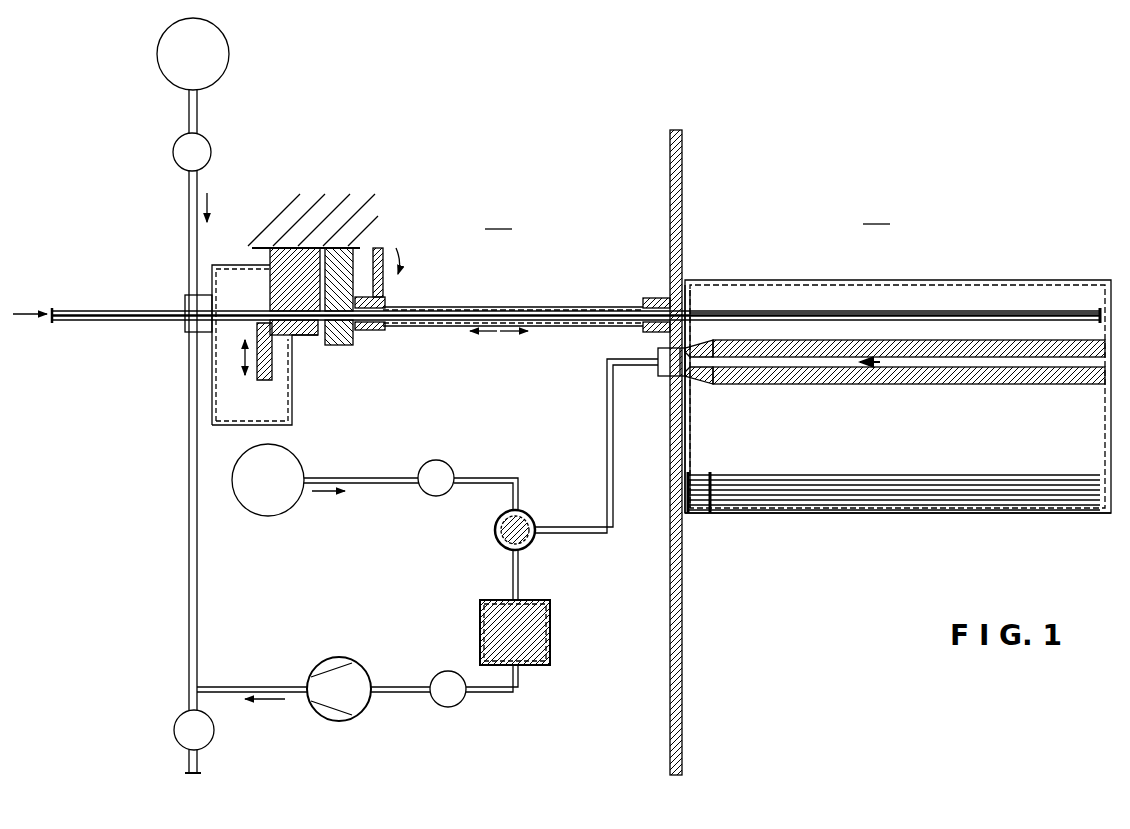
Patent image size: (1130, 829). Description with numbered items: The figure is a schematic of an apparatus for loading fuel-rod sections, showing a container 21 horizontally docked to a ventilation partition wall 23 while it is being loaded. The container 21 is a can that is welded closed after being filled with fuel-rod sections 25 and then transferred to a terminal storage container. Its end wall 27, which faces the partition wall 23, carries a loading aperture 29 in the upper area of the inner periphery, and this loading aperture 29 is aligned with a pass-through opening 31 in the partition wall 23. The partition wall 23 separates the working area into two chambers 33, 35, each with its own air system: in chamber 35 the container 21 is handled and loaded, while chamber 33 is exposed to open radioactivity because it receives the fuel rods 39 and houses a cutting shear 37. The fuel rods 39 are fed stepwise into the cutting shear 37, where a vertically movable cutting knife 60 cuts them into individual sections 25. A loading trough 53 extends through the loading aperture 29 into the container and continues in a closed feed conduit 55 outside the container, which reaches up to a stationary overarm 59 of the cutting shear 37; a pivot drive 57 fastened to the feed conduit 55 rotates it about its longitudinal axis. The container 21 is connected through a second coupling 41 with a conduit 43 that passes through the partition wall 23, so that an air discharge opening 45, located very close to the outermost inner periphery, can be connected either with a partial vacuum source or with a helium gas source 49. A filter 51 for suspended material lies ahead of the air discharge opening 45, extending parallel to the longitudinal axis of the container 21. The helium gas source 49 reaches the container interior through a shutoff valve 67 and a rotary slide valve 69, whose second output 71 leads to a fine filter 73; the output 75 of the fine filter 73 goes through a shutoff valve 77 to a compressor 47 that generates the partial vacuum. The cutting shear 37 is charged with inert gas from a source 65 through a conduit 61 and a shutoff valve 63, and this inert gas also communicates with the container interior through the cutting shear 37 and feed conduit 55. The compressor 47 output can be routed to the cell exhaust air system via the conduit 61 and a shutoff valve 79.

The container 21 is at (795, 282).
The ventilation partition wall 23 is at (684, 700).
The fuel-rod sections 25 is at (945, 312).
The end wall 27 is at (686, 435).
The loading aperture 29 is at (690, 300).
The pass-through opening 31 is at (668, 300).
The chamber 33 is at (499, 218).
The chamber 35 is at (877, 213).
The cutting shear 37 is at (300, 367).
The fuel rods 39 is at (110, 310).
The second coupling 41 is at (672, 360).
The conduit 43 is at (596, 536).
The air discharge opening 45 is at (700, 348).
The compressor 47 is at (365, 668).
The helium gas source 49 is at (293, 513).
The filter 51 is at (1035, 342).
The loading trough 53 is at (1082, 318).
The feed conduit 55 is at (495, 306).
The pivot drive 57 is at (383, 252).
The stationary overarm 59 is at (308, 327).
The cutting knife 60 is at (262, 378).
The conduit 61 is at (189, 200).
The shutoff valve 63 is at (172, 152).
The source of inert gas 65 is at (230, 56).
The shutoff valve 67 is at (455, 465).
The rotary slide valve 69 is at (530, 515).
The second output 71 is at (507, 552).
The fine filter 73 is at (552, 630).
The output 75 is at (525, 668).
The shutoff valve 77 is at (462, 700).
The shutoff valve 79 is at (173, 732).